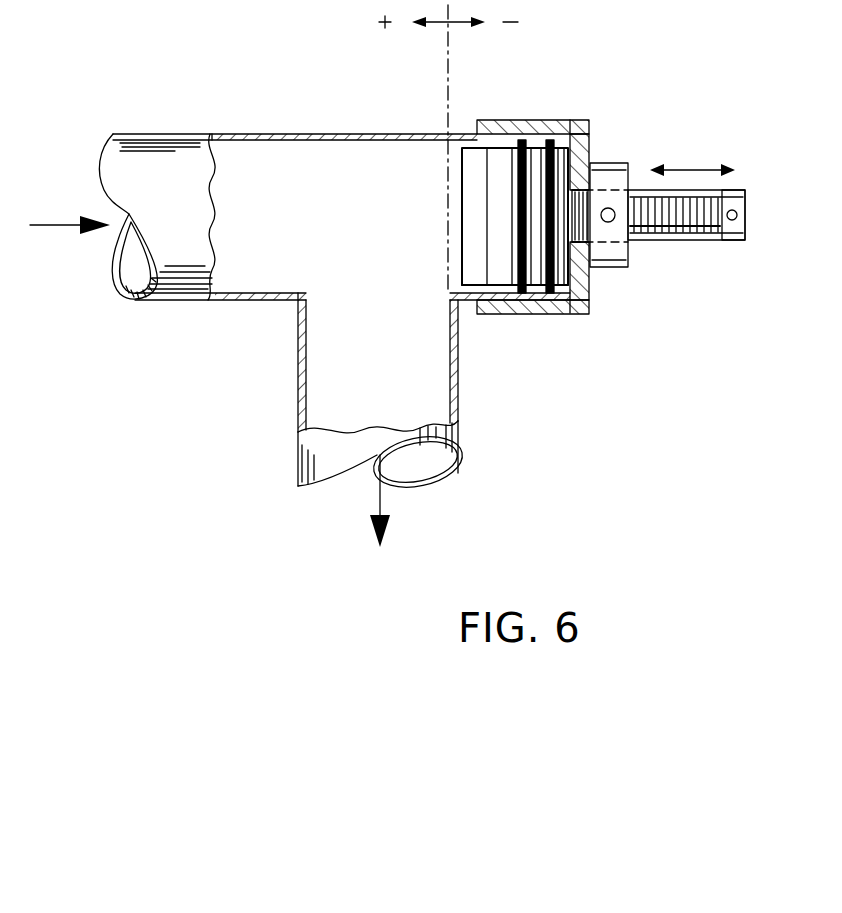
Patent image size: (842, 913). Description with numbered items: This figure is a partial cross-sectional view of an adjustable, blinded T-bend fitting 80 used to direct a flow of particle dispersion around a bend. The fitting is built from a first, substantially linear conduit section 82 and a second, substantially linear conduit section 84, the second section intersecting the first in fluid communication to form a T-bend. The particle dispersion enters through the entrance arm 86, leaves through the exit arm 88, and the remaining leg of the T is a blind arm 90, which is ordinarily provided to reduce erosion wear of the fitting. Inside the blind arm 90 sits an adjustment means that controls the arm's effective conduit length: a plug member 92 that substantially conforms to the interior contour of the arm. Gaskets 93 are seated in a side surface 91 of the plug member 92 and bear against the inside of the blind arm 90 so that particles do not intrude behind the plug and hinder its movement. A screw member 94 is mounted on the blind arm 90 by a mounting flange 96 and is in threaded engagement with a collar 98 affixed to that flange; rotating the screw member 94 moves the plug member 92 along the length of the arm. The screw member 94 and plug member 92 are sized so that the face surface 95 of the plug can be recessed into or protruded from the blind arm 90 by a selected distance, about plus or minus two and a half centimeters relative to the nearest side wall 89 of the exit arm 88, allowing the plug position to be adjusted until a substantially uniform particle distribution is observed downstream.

The flow control valve assembly 80 is at (136, 424).
The first linear conduit section 82 is at (316, 134).
The second linear conduit section 84 is at (458, 475).
The entrance arm 86 is at (155, 303).
The exit arm 88 is at (298, 410).
The side wall 89 is at (450, 322).
The blind arm 90 is at (466, 130).
The side surface 91 is at (502, 272).
The plug member 92 is at (500, 162).
The gaskets 93 is at (517, 207).
The screw member 94 is at (733, 245).
The face surface 95 is at (457, 230).
The mounting flange 96 is at (530, 315).
The collar 98 is at (613, 270).